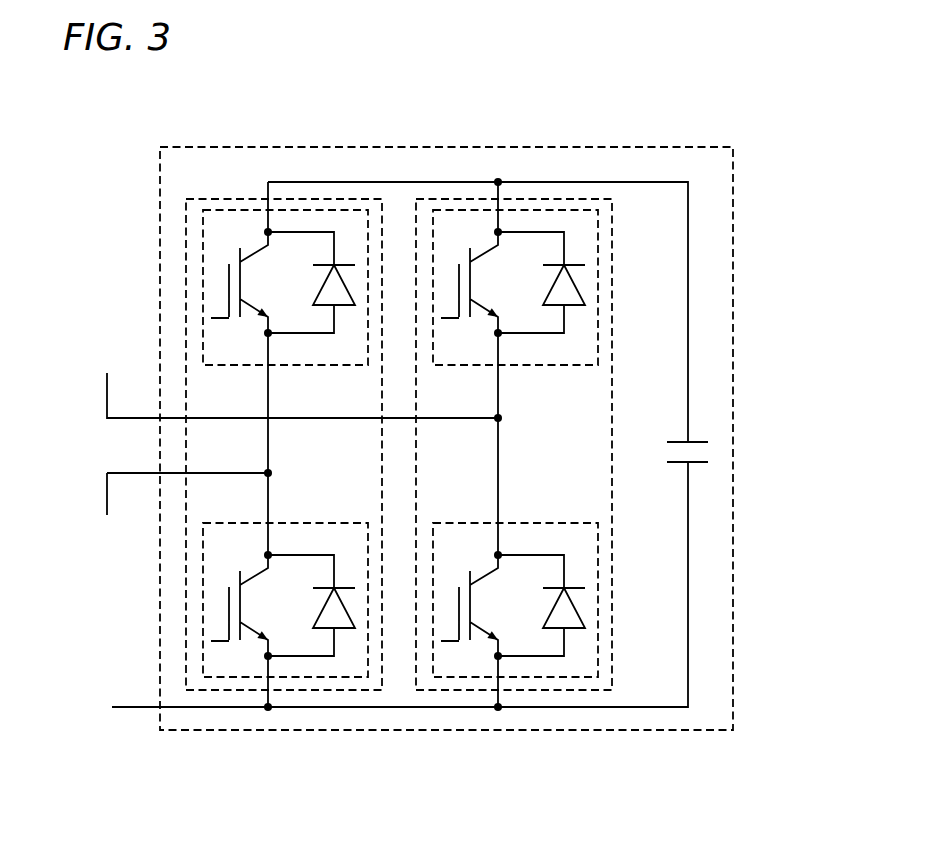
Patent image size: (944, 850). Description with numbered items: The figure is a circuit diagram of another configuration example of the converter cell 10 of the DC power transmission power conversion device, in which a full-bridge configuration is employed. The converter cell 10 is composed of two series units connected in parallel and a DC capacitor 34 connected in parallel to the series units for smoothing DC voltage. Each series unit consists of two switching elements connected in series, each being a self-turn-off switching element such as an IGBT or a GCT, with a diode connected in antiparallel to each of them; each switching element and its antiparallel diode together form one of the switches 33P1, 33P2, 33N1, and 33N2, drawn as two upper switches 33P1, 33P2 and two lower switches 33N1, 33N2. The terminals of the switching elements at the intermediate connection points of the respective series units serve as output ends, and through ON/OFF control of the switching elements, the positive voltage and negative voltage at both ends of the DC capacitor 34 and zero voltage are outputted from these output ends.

The converter cell 10 is at (733, 187).
The switch 33P1 is at (203, 280).
The switch 33P2 is at (598, 290).
The switch 33N1 is at (205, 613).
The switch 33N2 is at (598, 582).
The DC capacitor 34 is at (697, 430).